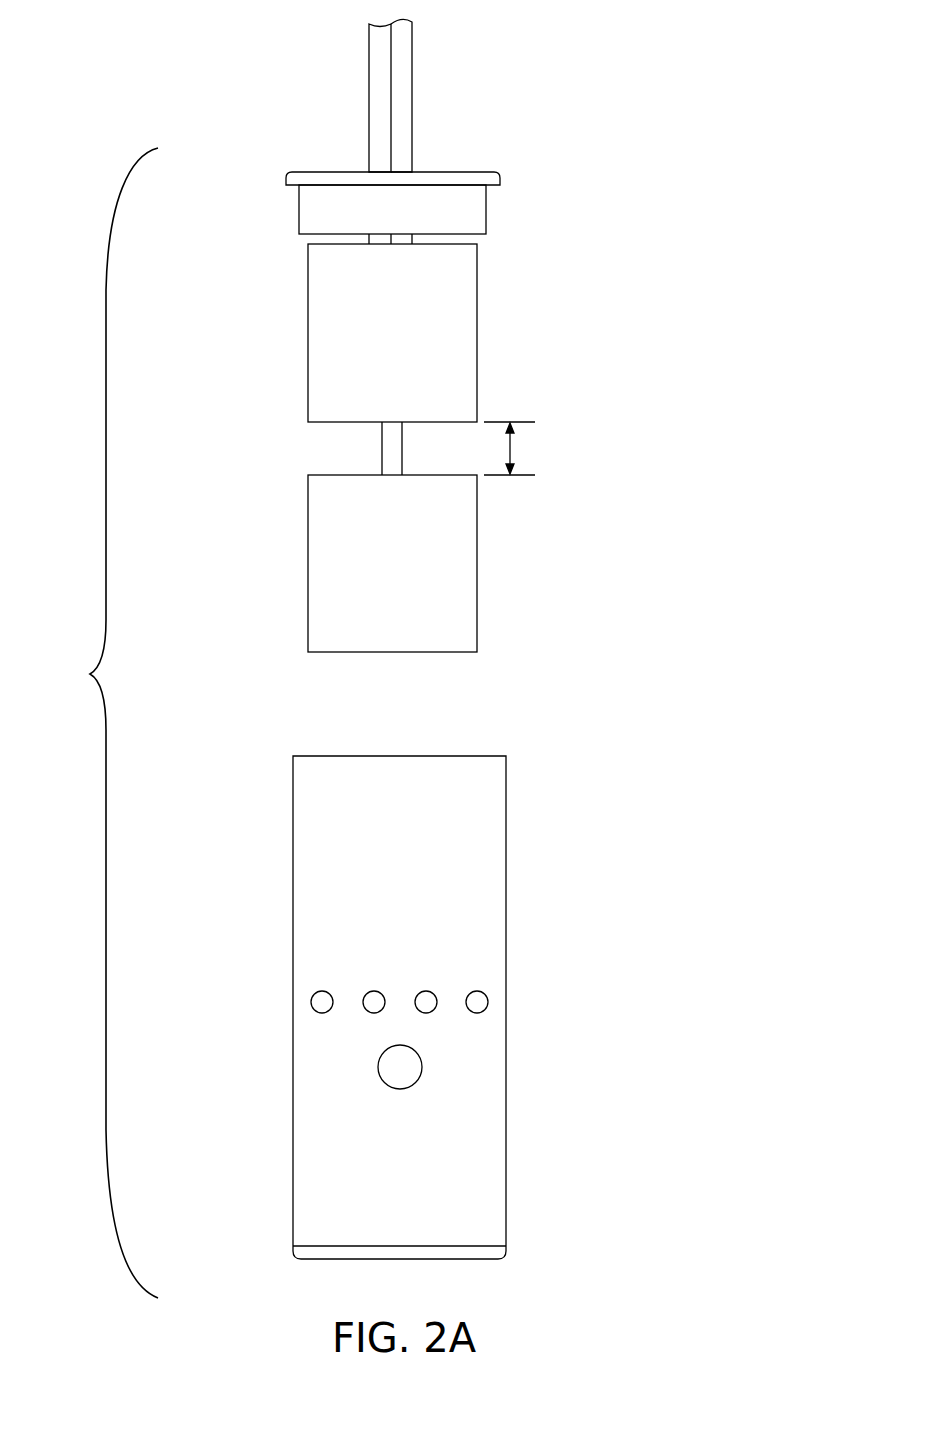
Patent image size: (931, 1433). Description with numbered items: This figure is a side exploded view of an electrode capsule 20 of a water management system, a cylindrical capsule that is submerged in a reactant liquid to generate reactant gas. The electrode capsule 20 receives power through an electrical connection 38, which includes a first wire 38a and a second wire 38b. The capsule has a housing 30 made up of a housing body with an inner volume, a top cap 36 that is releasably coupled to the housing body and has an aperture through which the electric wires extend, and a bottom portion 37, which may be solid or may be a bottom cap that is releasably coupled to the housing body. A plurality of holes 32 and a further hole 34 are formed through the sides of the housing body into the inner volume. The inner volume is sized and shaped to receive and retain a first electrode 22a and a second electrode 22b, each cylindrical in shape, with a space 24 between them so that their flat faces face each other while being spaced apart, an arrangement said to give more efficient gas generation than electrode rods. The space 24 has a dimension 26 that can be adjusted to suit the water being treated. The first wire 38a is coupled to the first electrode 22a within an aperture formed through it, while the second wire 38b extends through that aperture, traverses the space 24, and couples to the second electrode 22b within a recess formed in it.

The electrode capsule 20 is at (102, 723).
The first electrode 22a is at (457, 340).
The second electrode 22b is at (459, 598).
The space 24 is at (325, 457).
The dimension 26 is at (510, 448).
The housing 30 is at (478, 880).
The holes 32 is at (320, 995).
The hole 34 is at (390, 1073).
The top cap 36 is at (470, 207).
The bottom portion 37 is at (483, 1250).
The electrical connection 38 is at (368, 241).
The first wire 38a is at (380, 96).
The second wire 38b is at (400, 72).